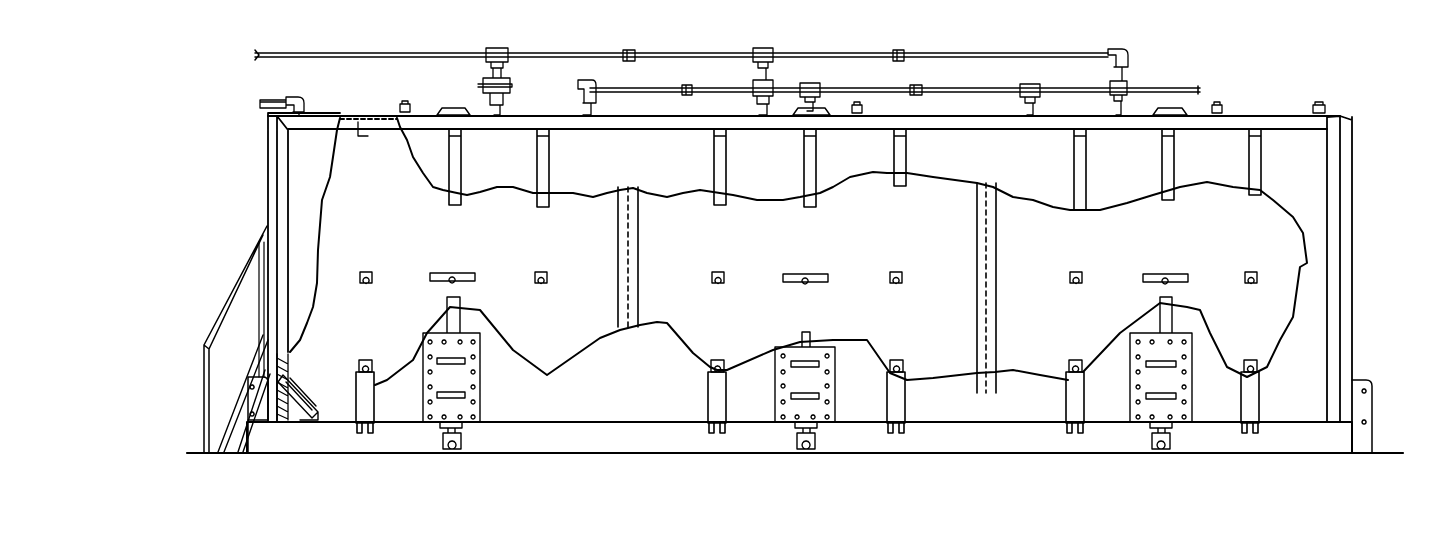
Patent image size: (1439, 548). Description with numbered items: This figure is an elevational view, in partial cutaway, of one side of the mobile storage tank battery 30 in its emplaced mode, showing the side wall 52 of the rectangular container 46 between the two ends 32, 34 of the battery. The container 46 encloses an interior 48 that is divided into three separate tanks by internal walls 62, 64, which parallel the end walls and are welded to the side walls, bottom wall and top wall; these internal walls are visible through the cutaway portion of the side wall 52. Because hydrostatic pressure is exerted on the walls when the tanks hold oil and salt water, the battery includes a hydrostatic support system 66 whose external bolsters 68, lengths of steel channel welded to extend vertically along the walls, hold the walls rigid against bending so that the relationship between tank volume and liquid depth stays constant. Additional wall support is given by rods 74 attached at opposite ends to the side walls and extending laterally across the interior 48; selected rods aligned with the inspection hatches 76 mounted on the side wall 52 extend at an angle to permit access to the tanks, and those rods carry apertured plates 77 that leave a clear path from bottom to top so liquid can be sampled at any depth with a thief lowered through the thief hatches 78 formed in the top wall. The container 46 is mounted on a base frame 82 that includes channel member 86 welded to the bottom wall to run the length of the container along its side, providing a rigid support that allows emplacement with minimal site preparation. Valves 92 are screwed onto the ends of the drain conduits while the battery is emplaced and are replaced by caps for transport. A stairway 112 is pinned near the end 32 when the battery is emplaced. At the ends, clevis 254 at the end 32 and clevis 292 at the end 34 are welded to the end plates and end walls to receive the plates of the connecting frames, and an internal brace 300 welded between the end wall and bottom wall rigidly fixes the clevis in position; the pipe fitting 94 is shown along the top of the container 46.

The mobile storage tank battery 30 is at (1330, 80).
The end 32 is at (266, 165).
The end 34 is at (1355, 283).
The rectangular container 46 is at (1242, 118).
The interior 48 is at (1262, 224).
The side wall 52 is at (1026, 176).
The internal wall 62 is at (996, 282).
The internal wall 64 is at (638, 276).
The hydrostatic support system 66 is at (1262, 166).
The external bolster 68 is at (548, 172).
The rod 74 is at (548, 279).
The inspection hatch 76 is at (470, 404).
The apertured plate 77 is at (460, 275).
The thief hatch 78 is at (455, 109).
The base frame 82 is at (612, 458).
The channel member 86 is at (1020, 453).
The valve 92 is at (443, 442).
The spray pipe 94 is at (578, 106).
The stairway 112 is at (260, 362).
The clevis 254 is at (253, 404).
The clevis 292 is at (1368, 406).
The internal brace 300 is at (300, 388).